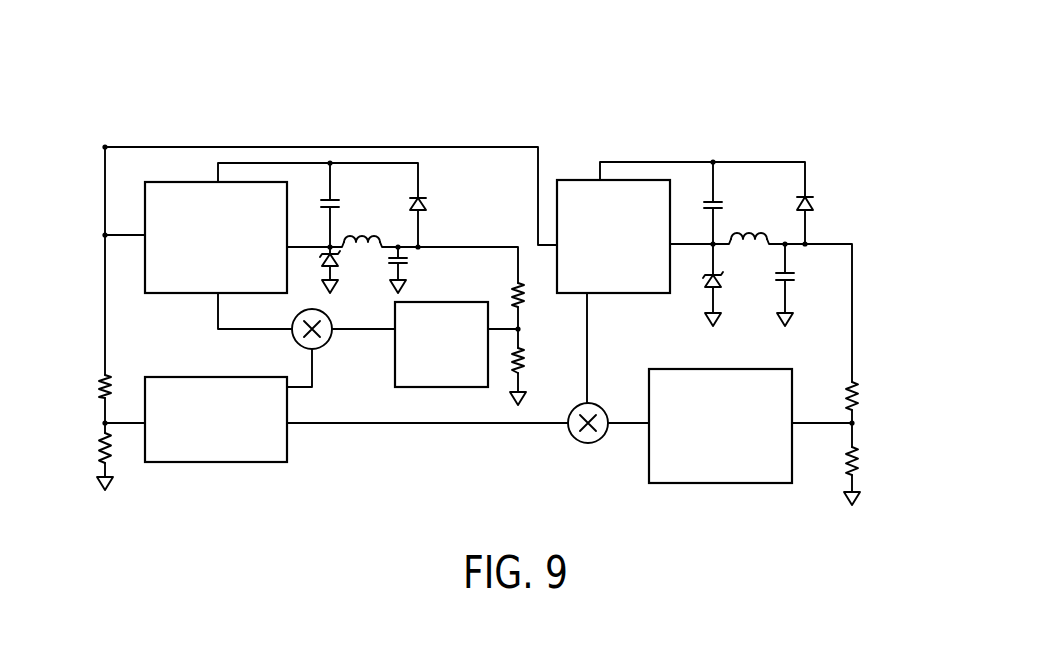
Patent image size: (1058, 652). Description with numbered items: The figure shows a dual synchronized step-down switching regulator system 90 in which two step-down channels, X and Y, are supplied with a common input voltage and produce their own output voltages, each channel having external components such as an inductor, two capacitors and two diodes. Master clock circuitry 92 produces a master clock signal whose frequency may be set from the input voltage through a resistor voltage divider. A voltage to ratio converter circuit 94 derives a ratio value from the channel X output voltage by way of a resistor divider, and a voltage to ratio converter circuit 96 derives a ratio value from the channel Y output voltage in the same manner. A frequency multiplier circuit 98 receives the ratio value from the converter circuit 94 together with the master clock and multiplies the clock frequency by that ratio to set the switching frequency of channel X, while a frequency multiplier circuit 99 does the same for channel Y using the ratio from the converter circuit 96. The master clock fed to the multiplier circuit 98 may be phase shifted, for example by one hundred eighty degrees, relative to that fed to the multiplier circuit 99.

The dual synchronized step-down switching regulator system 90 is at (490, 282).
The master clock circuitry 92 is at (252, 463).
The voltage to ratio converter circuit 94 is at (393, 347).
The voltage to ratio converter circuit 96 is at (712, 484).
The frequency multiplier circuit 98 is at (293, 339).
The frequency multiplier circuit 99 is at (587, 444).